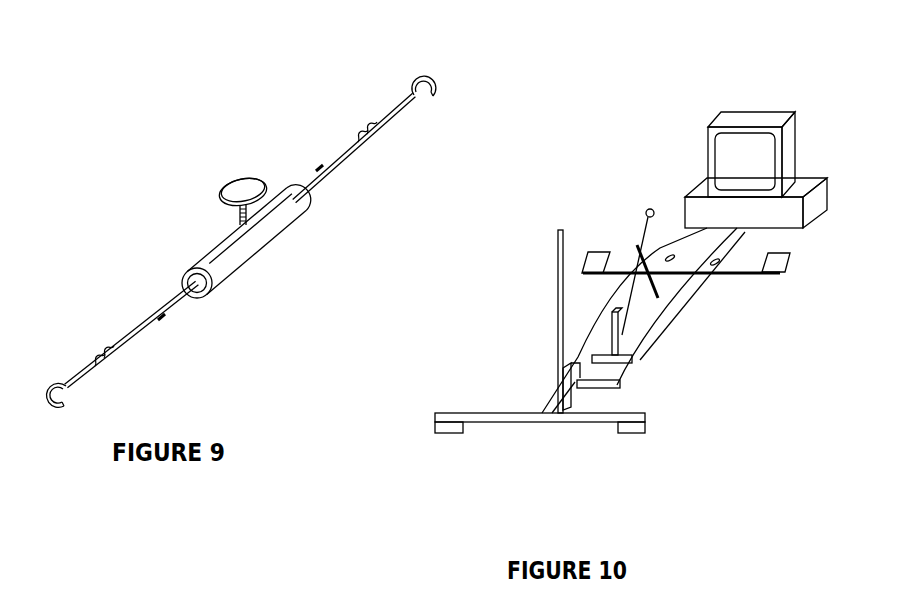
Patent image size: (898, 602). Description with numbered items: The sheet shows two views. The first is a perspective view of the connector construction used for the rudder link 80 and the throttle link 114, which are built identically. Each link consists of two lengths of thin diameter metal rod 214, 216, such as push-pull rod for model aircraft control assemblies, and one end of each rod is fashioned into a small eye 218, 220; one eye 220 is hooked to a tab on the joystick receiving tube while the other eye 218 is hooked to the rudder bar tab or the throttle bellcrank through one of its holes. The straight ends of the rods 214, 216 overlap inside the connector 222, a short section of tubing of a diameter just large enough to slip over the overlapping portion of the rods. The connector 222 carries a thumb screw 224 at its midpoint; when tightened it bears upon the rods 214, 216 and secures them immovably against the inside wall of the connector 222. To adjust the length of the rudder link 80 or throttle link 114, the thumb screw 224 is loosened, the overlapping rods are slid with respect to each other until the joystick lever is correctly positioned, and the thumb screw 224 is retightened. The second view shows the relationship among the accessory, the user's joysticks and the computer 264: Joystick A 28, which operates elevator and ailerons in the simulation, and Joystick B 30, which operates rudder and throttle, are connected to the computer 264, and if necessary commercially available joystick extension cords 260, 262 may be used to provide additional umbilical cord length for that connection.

In FIG. 9, the rudder link 80 is at (225, 114).
In FIG. 9, the throttle link 114 is at (255, 252).
In FIG. 9, the metal rod 214 is at (135, 325).
In FIG. 9, the metal rod 216 is at (337, 170).
In FIG. 9, the eye 218 is at (424, 64).
In FIG. 9, the eye 220 is at (63, 410).
In FIG. 9, the connector 222 is at (230, 278).
In FIG. 9, the thumb screw 224 is at (219, 194).
In FIG. 10, the joystick extension cord 262 is at (688, 244).
In FIG. 10, the computer 264 is at (698, 157).
In FIG. 10, the joystick extension cord 260 is at (730, 243).
In FIG. 10, the Joystick A 28 is at (641, 350).
In FIG. 10, the Joystick B 30 is at (592, 396).